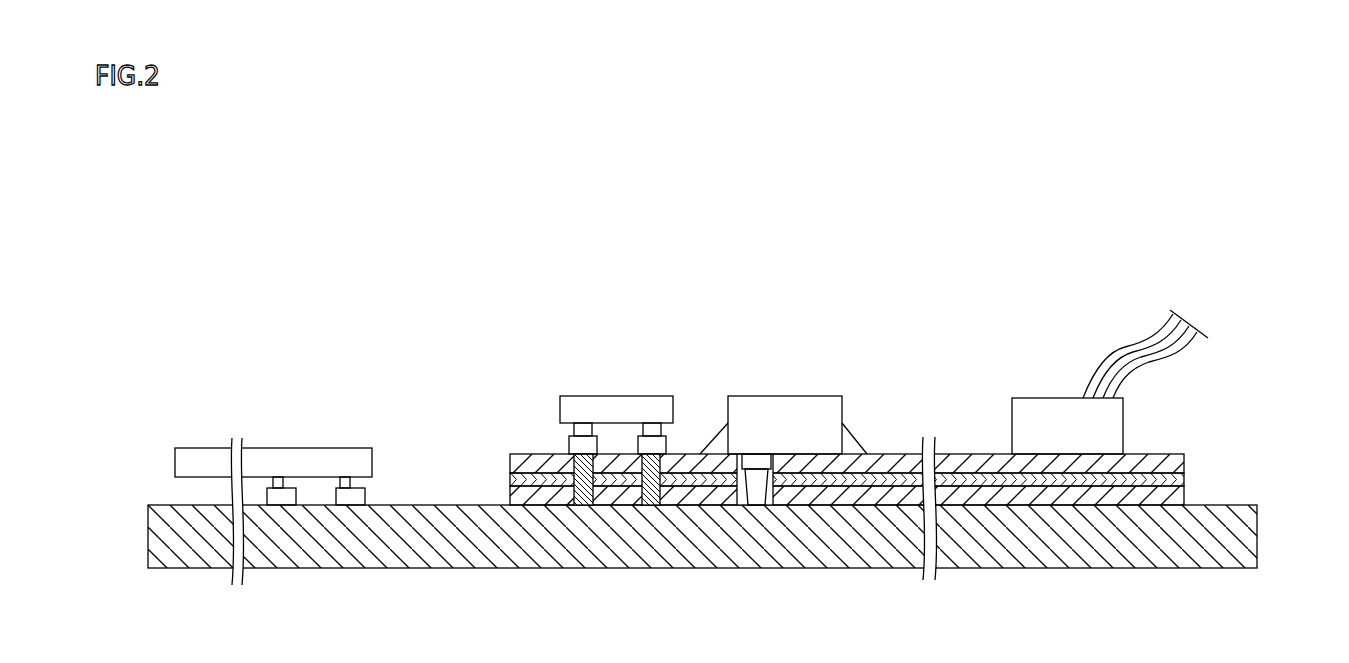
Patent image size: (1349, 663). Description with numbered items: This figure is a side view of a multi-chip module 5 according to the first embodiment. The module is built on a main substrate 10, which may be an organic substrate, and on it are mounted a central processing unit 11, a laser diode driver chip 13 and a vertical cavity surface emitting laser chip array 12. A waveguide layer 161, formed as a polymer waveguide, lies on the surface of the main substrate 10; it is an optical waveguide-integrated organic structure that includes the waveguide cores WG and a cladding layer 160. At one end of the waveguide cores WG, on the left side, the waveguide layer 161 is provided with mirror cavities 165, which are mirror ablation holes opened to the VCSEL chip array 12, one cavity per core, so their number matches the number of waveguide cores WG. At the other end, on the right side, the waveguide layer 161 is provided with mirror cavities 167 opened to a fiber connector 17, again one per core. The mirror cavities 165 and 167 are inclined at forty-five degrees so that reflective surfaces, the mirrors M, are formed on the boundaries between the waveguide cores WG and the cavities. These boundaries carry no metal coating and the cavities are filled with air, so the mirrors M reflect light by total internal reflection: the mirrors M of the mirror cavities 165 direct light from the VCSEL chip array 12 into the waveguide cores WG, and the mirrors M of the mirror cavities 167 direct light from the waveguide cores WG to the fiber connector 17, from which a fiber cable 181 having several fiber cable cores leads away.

The multi-chip module 5 is at (1212, 251).
The main substrate 10 is at (1180, 568).
The central processing unit 11 is at (318, 448).
The vertical cavity surface emitting laser chip array 12 is at (790, 396).
The laser diode driver chip 13 is at (623, 396).
The fiber connector 17 is at (997, 410).
The cladding layer 160 is at (505, 464).
The waveguide layer 161 is at (1184, 494).
The mirror cavity 165 is at (790, 476).
The mirror cavity 167 is at (1090, 475).
The fiber cable 181 is at (1133, 342).
The waveguide core WG is at (543, 487).
The mirror M is at (820, 483).